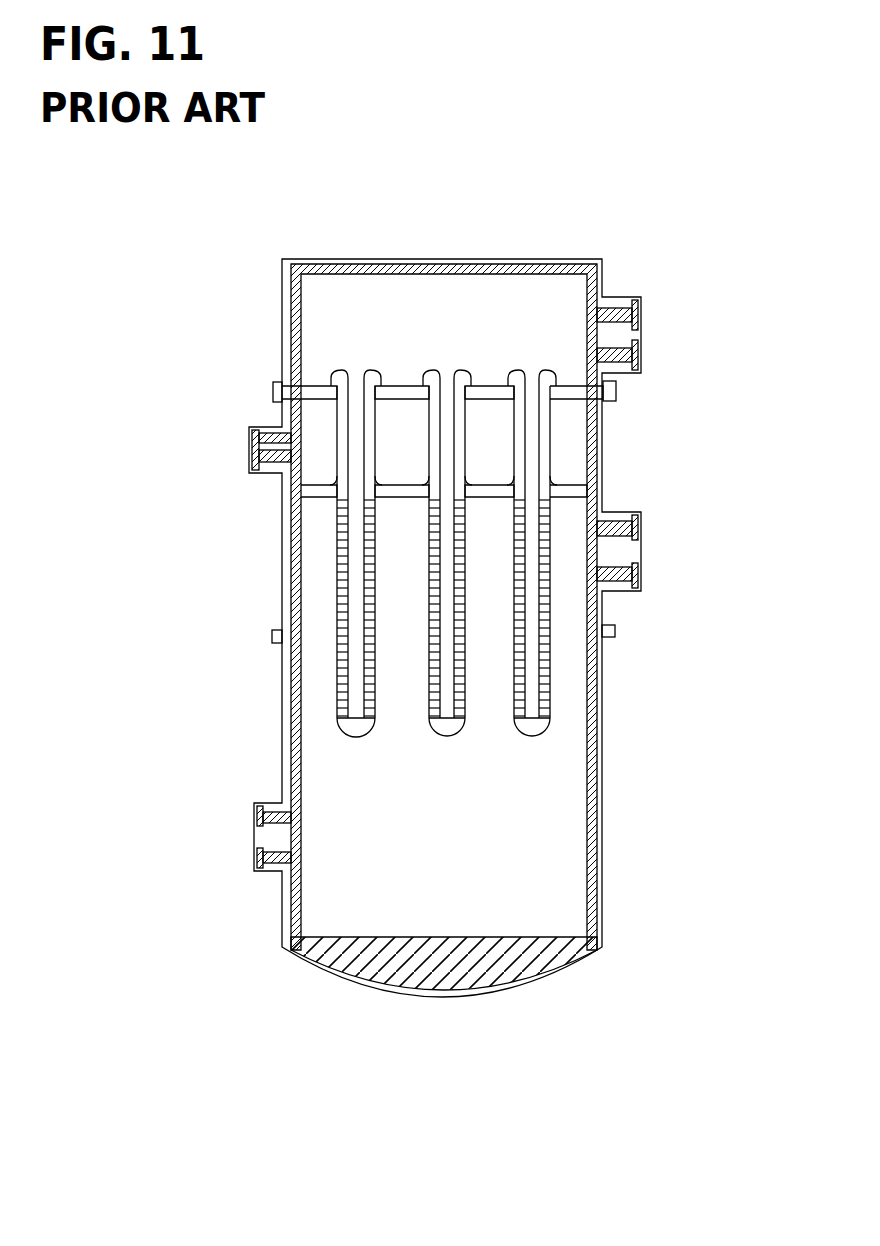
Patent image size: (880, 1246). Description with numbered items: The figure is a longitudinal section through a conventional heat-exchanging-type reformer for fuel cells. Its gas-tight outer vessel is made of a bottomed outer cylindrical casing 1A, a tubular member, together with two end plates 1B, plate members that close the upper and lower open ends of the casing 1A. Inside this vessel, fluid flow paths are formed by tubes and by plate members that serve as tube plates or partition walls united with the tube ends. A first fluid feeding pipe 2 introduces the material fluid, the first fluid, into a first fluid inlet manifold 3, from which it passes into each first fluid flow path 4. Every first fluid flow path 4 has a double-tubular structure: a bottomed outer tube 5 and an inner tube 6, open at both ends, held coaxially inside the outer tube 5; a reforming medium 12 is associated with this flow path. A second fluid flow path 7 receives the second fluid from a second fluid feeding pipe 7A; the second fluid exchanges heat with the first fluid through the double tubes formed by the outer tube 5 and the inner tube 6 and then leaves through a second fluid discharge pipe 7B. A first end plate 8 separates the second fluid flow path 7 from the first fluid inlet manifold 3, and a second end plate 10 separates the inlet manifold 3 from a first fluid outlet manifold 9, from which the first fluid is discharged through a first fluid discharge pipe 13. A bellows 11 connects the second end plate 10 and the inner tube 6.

The outer cylindrical casing 1A is at (604, 858).
The end plate 1B is at (407, 264).
The first fluid feeding pipe 2 is at (251, 451).
The first fluid inlet manifold 3 is at (562, 433).
The first fluid flow path 4 is at (358, 738).
The outer tube 5 is at (336, 655).
The inner tube 6 is at (352, 597).
The second fluid flow path 7 is at (436, 904).
The second fluid feeding pipe 7A is at (262, 832).
The second fluid discharge pipe 7B is at (637, 554).
The first end plate 8 is at (401, 498).
The first fluid outlet manifold 9 is at (500, 308).
The second end plate 10 is at (405, 386).
The bellows 11 is at (338, 375).
The reforming medium 12 is at (341, 686).
The first fluid discharge pipe 13 is at (637, 335).